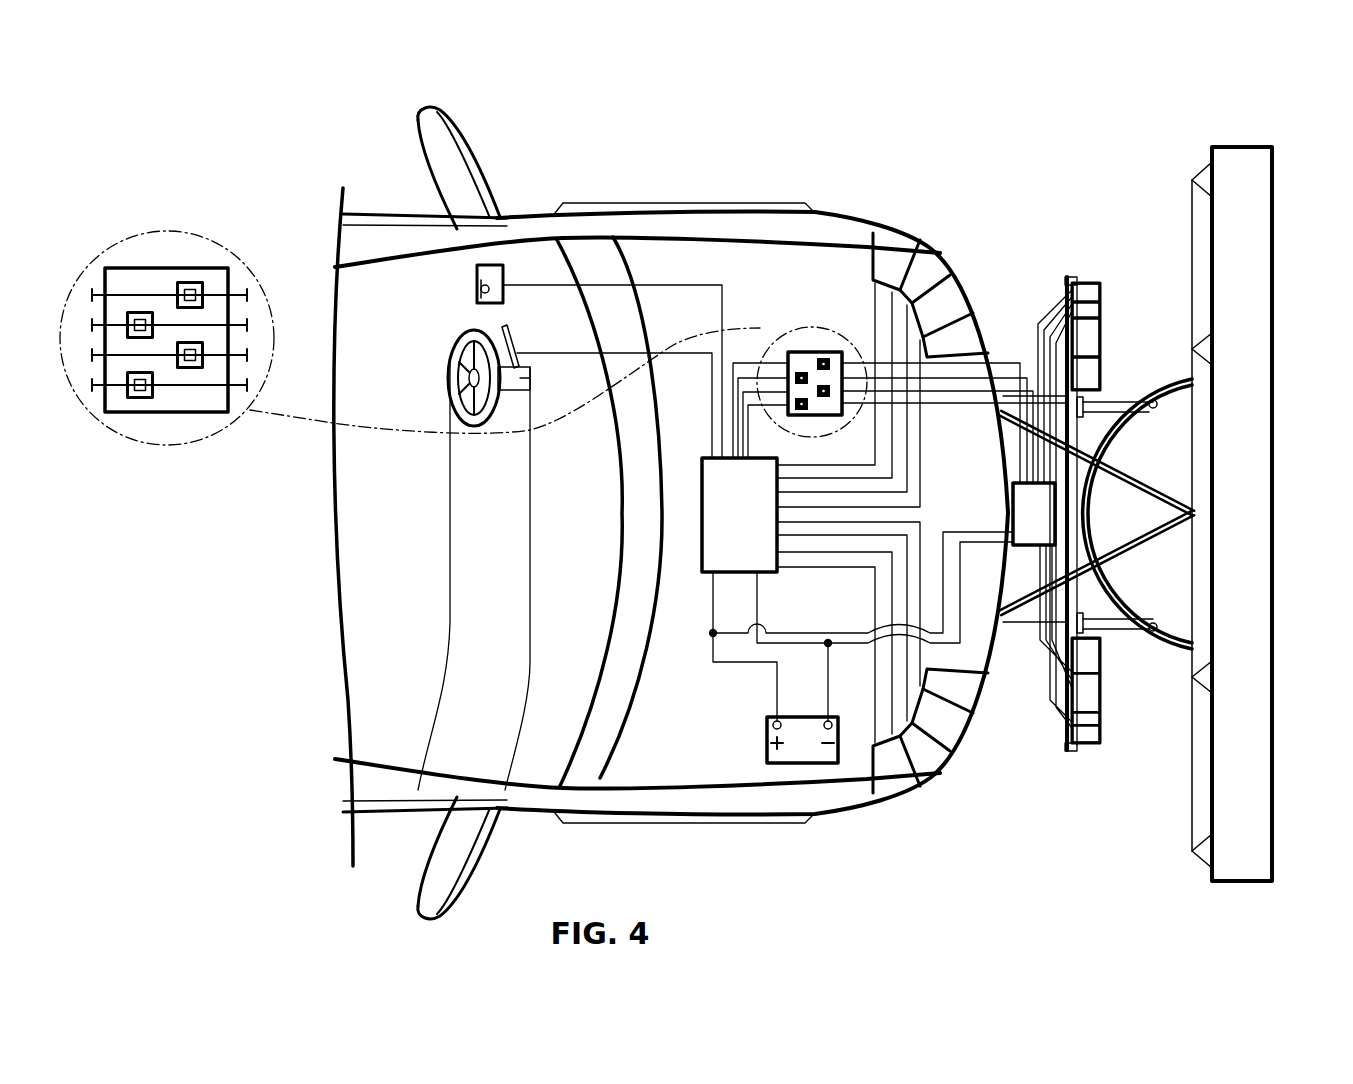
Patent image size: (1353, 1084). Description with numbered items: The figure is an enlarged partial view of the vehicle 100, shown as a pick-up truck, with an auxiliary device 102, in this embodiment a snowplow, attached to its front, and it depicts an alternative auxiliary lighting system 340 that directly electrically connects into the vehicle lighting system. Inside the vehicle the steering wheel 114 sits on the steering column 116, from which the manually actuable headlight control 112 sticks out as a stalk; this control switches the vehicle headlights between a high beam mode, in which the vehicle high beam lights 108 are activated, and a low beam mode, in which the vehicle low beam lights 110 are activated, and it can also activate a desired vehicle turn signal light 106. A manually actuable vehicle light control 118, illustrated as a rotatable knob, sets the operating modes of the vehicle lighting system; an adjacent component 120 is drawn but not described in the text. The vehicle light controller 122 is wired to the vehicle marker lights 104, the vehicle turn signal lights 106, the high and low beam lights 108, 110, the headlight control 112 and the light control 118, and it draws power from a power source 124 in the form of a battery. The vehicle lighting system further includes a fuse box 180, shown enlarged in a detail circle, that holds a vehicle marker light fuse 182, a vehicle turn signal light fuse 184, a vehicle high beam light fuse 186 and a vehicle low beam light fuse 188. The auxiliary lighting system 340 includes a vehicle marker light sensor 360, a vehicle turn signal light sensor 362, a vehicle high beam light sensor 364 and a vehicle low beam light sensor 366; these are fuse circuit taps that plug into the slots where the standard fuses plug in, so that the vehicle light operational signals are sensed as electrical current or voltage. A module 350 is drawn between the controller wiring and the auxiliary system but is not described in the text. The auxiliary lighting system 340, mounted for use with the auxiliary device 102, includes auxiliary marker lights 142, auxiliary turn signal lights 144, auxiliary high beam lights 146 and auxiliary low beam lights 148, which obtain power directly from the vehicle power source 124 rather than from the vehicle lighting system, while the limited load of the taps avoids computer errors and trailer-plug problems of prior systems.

The vehicle 100 is at (308, 96).
The auxiliary device 102 is at (1281, 127).
The vehicle marker lights 104 is at (870, 257).
The vehicle turn signal lights 106 is at (918, 262).
The vehicle high beam lights 108 is at (950, 272).
The vehicle low beam lights 110 is at (978, 330).
The manually actuable headlight control 112 is at (511, 332).
The steering wheel 114 is at (447, 357).
The steering column 116 is at (527, 367).
The manually actuable vehicle light control 118 is at (477, 297).
The display unit 120 is at (497, 265).
The vehicle light controller 122 is at (702, 558).
The power source 124 is at (767, 757).
The auxiliary marker lights 142 is at (1097, 293).
The auxiliary turn signal lights 144 is at (1097, 310).
The auxiliary high beam lights 146 is at (1087, 343).
The auxiliary low beam lights 148 is at (1097, 370).
The fuse box 180 is at (800, 352).
The vehicle marker light fuse 182 is at (147, 397).
The vehicle turn signal light fuse 184 is at (196, 367).
The vehicle high beam light fuse 186 is at (132, 313).
The vehicle low beam light fuse 188 is at (173, 283).
The auxiliary lighting system 340 is at (1094, 270).
The interface module 350 is at (1013, 497).
The vehicle marker light sensor 360 is at (130, 397).
The vehicle turn signal light sensor 362 is at (184, 367).
The vehicle high beam light sensor 364 is at (147, 313).
The vehicle low beam light sensor 366 is at (200, 281).